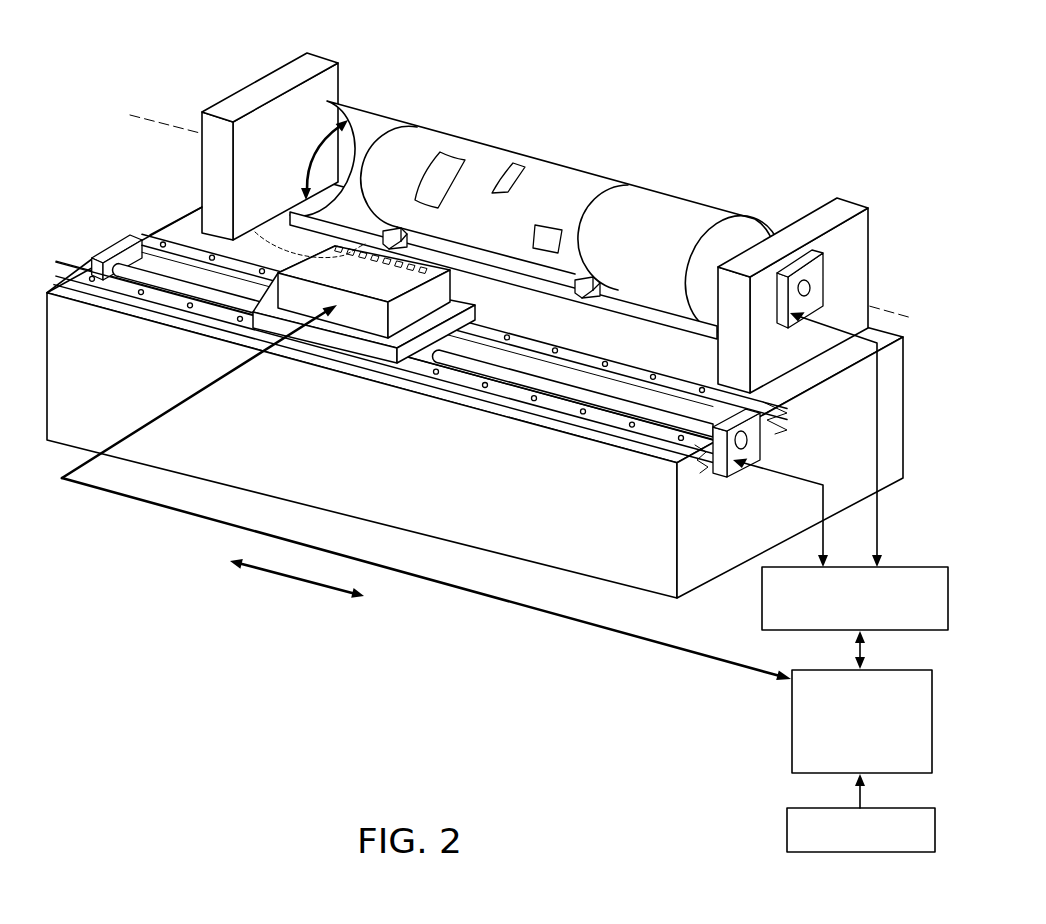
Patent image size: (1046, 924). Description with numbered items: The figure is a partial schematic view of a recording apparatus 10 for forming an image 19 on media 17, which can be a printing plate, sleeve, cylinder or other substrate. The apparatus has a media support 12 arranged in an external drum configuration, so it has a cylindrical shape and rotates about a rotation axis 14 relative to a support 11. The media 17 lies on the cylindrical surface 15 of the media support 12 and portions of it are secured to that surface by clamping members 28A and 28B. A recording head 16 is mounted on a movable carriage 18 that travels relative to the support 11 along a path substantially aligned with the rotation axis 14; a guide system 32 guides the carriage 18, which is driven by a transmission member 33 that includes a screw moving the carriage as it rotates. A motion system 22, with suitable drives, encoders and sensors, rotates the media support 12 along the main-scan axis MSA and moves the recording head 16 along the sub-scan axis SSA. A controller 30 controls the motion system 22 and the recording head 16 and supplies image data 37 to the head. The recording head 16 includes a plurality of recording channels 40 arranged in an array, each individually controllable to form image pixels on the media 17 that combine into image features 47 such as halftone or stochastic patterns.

The recording apparatus 10 is at (445, 77).
The support 11 is at (563, 420).
The media support 12 is at (745, 240).
The rotation axis 14 is at (877, 310).
The cylindrical surface 15 is at (693, 223).
The recording head 16 is at (350, 320).
The media 17 is at (430, 132).
The carriage 18 is at (367, 350).
The image 19 is at (557, 183).
The motion system 22 is at (778, 618).
The clamping member 28A is at (591, 278).
The clamping member 28B is at (385, 226).
The controller 30 is at (803, 743).
The guide system 32 is at (682, 378).
The transmission member 33 is at (518, 378).
The image data 37 is at (793, 845).
The recording channels 40 is at (258, 235).
The image features 47 is at (543, 230).
The main-scan axis MSA is at (313, 148).
The sub-scan axis SSA is at (298, 582).